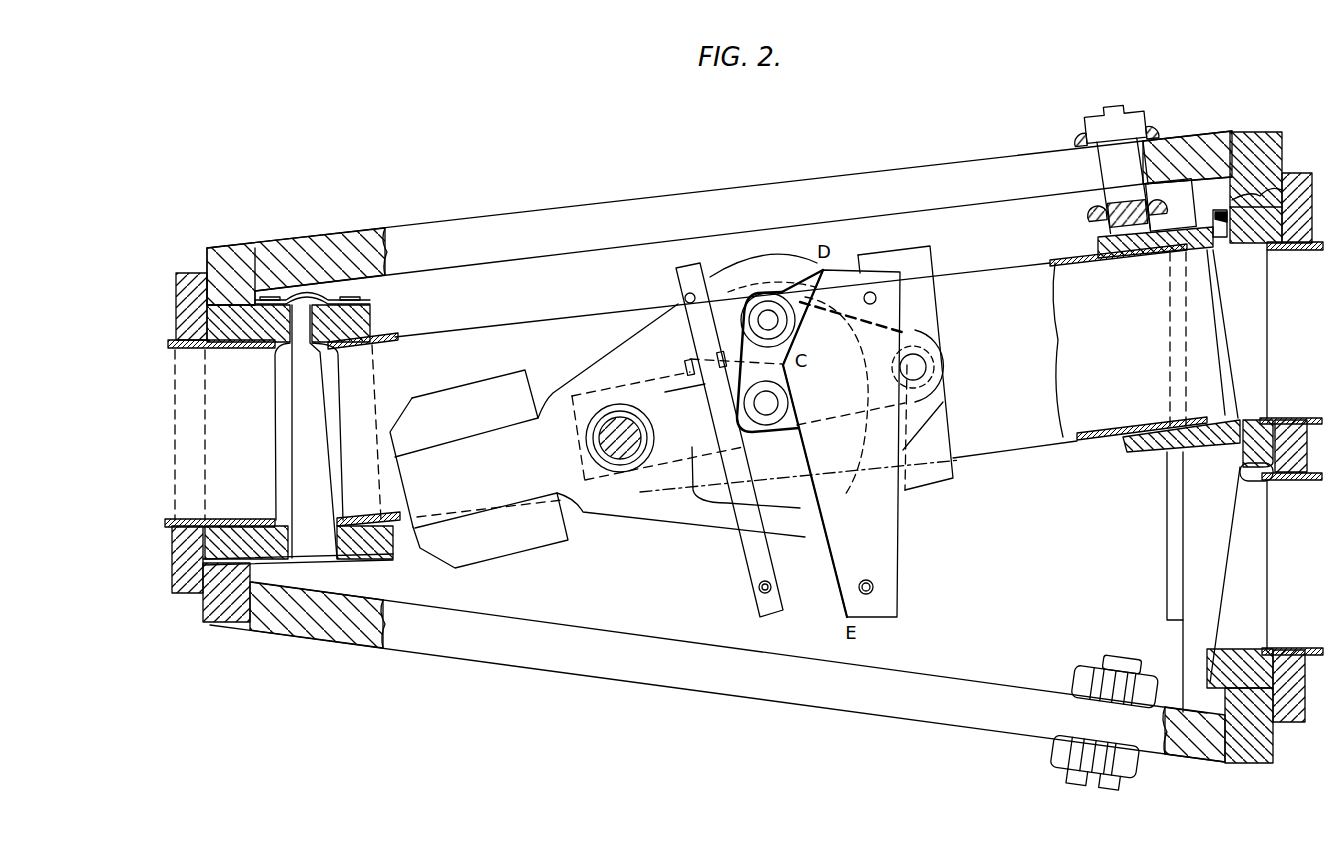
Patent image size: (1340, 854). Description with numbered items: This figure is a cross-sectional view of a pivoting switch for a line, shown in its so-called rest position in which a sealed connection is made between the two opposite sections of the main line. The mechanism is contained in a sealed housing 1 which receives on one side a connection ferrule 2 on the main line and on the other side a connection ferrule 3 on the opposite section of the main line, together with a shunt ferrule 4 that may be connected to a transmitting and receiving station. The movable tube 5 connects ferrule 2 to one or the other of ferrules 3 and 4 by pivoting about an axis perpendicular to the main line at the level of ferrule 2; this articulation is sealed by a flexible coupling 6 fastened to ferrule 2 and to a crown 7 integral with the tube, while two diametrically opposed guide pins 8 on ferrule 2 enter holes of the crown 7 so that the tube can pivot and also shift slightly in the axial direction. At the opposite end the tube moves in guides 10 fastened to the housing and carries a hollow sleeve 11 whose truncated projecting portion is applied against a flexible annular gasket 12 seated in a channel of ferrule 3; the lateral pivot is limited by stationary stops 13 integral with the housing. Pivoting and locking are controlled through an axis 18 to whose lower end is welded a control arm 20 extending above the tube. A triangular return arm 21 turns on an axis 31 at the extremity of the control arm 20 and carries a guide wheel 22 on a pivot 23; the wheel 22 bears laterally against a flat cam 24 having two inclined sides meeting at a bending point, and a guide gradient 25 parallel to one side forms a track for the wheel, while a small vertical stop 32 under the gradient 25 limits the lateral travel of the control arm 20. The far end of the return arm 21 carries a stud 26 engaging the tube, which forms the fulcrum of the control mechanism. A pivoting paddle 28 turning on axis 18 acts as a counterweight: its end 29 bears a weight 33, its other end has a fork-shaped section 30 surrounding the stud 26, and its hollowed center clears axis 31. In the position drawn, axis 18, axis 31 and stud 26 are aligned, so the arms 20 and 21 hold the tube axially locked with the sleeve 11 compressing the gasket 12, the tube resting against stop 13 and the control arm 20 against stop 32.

The sealed housing 1 is at (428, 643).
The connection ferrule 2 is at (240, 560).
The connection ferrule 3 is at (1284, 220).
The shunt ferrule 4 is at (1262, 672).
The movable tube 5 is at (1069, 262).
The flexible coupling 6 is at (303, 550).
The crown 7 is at (357, 550).
The guide pins 8 is at (326, 441).
The guides 10 is at (1183, 532).
The hollow sleeve 11 is at (1165, 242).
The flexible annular gasket 12 is at (1278, 185).
The stationary stops 13 is at (1128, 210).
The axis 18 is at (612, 456).
The control arm 20 is at (700, 447).
The return arm 21 is at (742, 343).
The guide wheel 22 is at (780, 312).
The pivot 23 is at (764, 316).
The flat cam 24 is at (864, 278).
The guide gradient 25 is at (672, 327).
The stud 26 is at (922, 370).
The pivoting paddle 28 is at (587, 378).
The end 29 is at (454, 440).
The fork-shaped section 30 is at (928, 333).
The axis 31 is at (765, 403).
The vertical stop 32 is at (688, 366).
The weight 33 is at (466, 548).